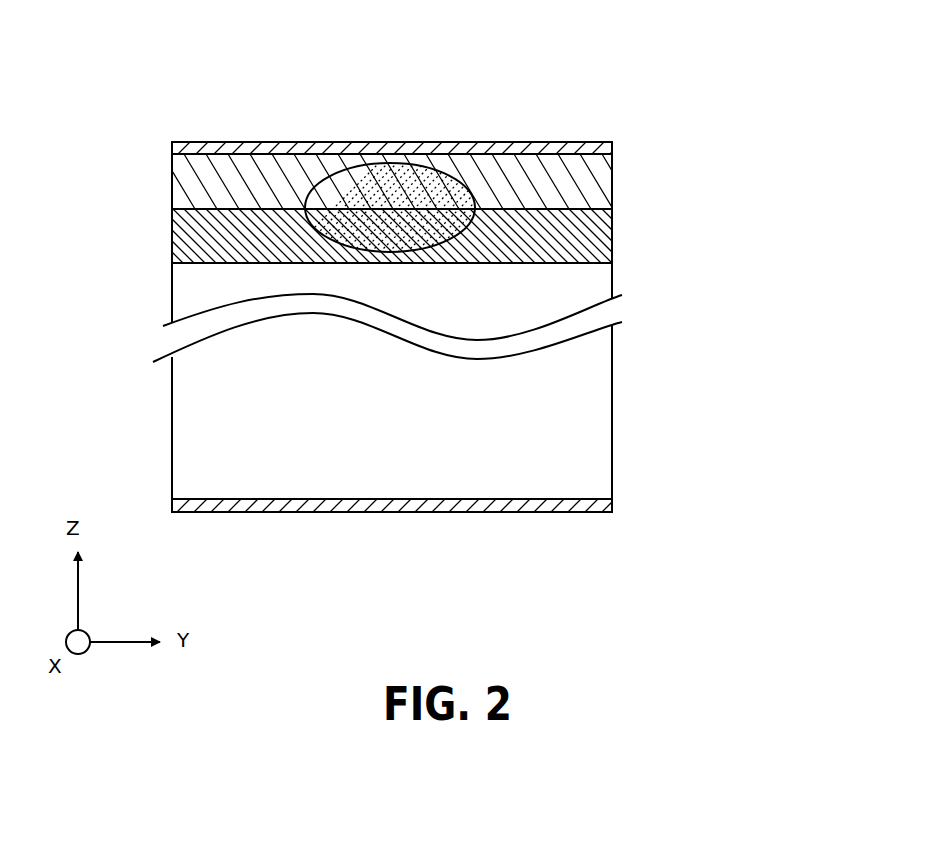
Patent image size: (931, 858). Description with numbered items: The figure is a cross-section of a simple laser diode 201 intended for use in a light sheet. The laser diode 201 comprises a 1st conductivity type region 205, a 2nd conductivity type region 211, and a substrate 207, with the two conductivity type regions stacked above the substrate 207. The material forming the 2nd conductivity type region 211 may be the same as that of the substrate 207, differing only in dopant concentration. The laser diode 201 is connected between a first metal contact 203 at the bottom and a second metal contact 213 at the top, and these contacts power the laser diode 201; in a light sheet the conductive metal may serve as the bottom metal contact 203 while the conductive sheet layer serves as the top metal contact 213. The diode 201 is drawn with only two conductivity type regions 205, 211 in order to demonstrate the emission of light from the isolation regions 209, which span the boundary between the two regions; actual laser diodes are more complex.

The laser diode 201 is at (75, 135).
The first metal contact 203 is at (350, 516).
The 1st conductivity type region 205 is at (608, 180).
The substrate 207 is at (602, 395).
The isolation regions 209 is at (408, 190).
The 2nd conductivity type region 211 is at (608, 232).
The second metal contact 213 is at (258, 138).